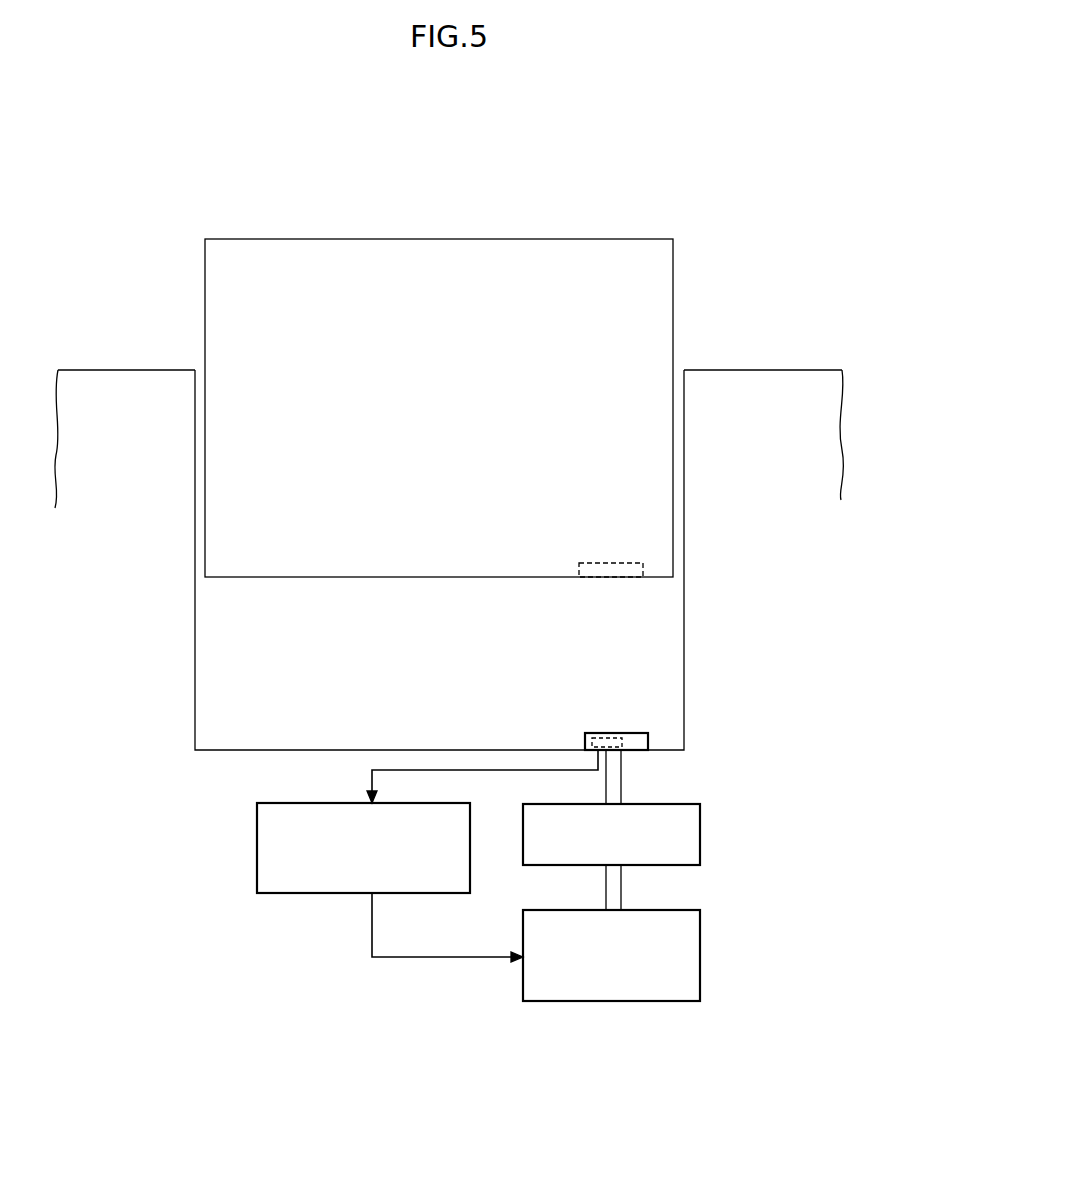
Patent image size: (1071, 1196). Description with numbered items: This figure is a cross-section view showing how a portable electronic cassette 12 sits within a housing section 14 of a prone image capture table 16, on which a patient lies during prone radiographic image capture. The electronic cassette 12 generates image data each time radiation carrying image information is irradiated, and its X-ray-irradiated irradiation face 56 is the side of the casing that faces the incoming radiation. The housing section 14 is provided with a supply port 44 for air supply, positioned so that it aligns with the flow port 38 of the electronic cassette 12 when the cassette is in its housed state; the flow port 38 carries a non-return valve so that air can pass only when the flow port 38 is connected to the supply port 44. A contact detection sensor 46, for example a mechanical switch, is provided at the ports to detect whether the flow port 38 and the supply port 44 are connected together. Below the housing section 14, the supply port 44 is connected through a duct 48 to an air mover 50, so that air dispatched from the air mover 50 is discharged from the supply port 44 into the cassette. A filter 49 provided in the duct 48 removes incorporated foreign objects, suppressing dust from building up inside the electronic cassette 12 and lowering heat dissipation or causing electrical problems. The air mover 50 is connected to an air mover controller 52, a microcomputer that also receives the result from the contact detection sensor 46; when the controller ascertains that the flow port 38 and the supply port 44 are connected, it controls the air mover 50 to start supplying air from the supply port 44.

The electronic cassette 12 is at (546, 239).
The housing section 14 is at (335, 651).
The prone image capture table 16 is at (770, 391).
The flow port 38 is at (600, 568).
The supply port 44 is at (638, 734).
The contact detection sensor 46 is at (598, 736).
The duct 48 is at (622, 778).
The filter 49 is at (702, 836).
The air mover 50 is at (702, 952).
The air mover controller 52 is at (257, 845).
The irradiation face 56 is at (419, 421).